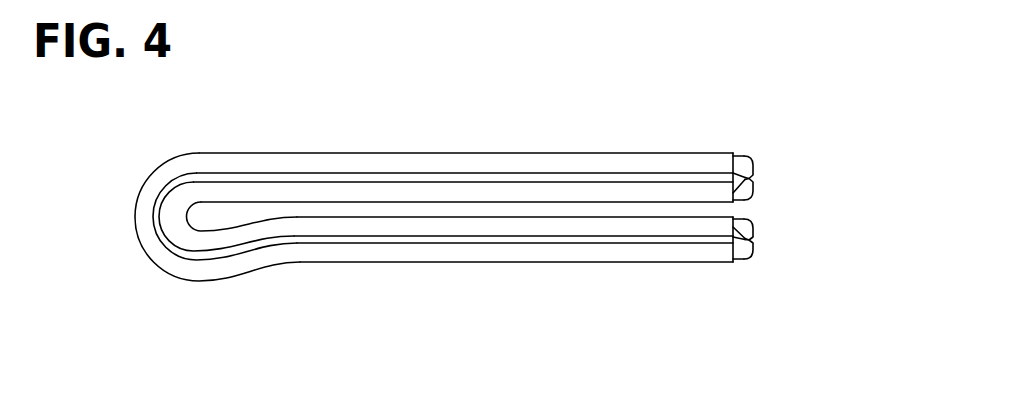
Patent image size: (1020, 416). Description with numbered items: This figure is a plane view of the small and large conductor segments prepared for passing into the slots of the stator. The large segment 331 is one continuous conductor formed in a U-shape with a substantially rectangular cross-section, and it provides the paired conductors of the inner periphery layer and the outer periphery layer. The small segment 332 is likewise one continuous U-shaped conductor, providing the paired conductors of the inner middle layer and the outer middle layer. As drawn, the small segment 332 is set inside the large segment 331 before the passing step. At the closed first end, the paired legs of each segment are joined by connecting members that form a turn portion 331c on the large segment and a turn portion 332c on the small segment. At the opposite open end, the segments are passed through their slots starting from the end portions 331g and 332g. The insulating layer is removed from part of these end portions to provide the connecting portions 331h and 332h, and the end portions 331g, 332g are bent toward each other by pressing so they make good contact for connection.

The large segment 331 is at (478, 218).
The small segment 332 is at (486, 220).
The turn portion 331c is at (152, 242).
The turn portion 332c is at (185, 198).
The end portion 331g is at (727, 162).
The end portion 332g is at (733, 192).
The connecting portion 331h is at (757, 160).
The connecting portion 332h is at (757, 179).